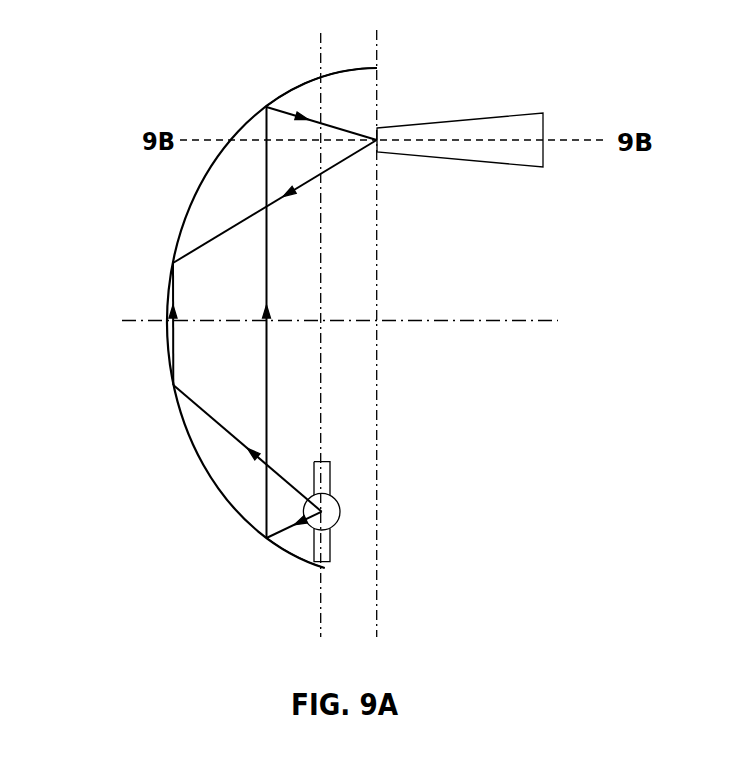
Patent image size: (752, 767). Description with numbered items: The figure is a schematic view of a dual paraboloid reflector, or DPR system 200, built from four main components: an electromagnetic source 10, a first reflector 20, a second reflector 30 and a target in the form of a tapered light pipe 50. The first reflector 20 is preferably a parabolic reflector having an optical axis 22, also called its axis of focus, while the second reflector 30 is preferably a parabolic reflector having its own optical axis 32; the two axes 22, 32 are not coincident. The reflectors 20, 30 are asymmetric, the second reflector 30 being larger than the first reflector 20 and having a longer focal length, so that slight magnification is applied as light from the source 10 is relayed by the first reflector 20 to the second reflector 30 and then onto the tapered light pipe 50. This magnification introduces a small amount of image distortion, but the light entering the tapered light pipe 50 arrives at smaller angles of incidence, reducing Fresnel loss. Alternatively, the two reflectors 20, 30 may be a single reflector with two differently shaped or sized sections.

The electromagnetic source 10 is at (340, 512).
The first reflector 20 is at (220, 529).
The optical axis 22 is at (320, 47).
The second reflector 30 is at (240, 90).
The optical axis 32 is at (377, 43).
The tapered light pipe 50 is at (523, 113).
The DPR system 200 is at (140, 287).